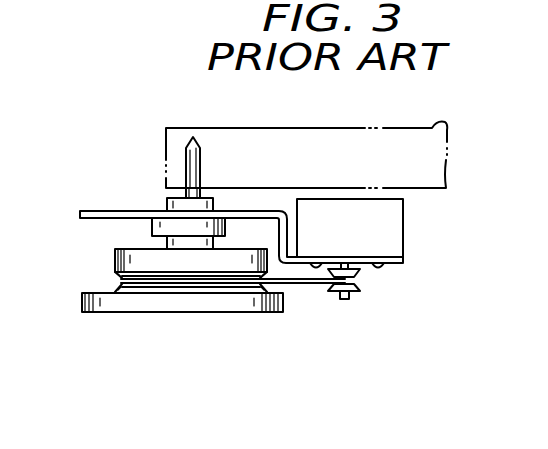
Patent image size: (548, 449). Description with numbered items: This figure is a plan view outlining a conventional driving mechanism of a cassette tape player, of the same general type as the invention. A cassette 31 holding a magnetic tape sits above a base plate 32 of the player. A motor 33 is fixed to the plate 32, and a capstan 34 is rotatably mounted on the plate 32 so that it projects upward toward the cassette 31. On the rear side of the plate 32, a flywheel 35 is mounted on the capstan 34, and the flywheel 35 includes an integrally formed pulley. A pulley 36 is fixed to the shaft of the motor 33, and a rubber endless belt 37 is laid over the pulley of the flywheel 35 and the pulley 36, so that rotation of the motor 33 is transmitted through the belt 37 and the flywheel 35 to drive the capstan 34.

The cassette 31 is at (432, 125).
The base plate 32 is at (108, 212).
The motor 33 is at (398, 230).
The capstan 34 is at (188, 159).
The flywheel 35 is at (127, 303).
The pulley 36 is at (356, 293).
The rubber endless belt 37 is at (305, 287).